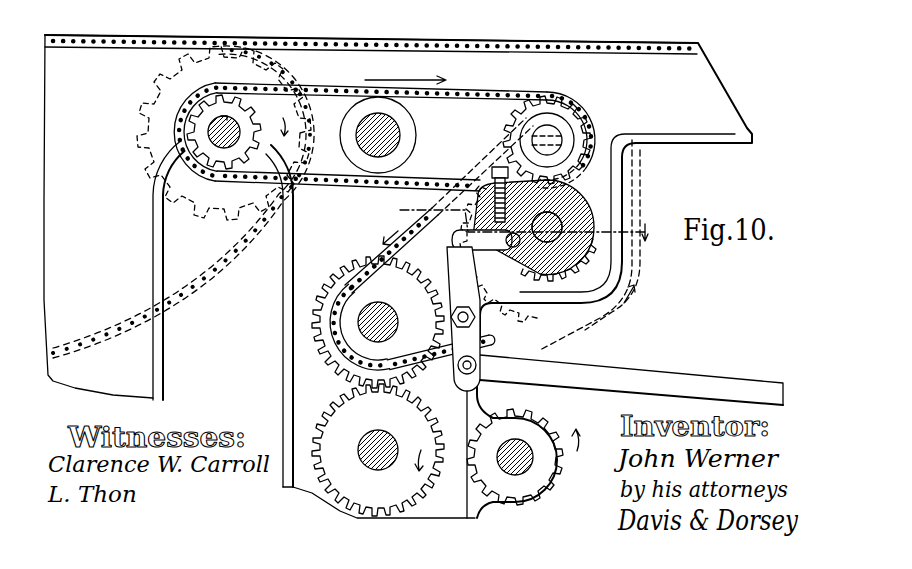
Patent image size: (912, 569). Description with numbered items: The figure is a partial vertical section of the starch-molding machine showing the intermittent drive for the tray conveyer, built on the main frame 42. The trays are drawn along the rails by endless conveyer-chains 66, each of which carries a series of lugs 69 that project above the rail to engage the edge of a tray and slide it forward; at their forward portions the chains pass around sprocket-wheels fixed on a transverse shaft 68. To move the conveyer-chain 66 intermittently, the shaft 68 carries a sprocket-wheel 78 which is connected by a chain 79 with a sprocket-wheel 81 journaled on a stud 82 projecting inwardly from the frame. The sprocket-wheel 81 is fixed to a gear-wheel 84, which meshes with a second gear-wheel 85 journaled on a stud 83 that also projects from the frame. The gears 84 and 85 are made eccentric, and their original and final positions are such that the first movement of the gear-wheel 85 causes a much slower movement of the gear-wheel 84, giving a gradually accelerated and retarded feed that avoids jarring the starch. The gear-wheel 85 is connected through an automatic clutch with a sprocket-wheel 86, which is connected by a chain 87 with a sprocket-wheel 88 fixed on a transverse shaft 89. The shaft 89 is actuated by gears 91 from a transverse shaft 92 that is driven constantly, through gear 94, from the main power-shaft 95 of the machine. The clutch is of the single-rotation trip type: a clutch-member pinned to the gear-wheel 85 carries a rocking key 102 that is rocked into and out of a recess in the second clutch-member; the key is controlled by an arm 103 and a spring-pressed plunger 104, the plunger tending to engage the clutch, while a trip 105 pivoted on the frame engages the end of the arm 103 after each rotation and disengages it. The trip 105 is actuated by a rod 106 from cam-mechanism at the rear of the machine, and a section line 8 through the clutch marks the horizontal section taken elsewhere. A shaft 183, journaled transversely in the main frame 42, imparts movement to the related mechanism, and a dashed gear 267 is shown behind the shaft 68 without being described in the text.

The section line 8- 8 is at (525, 229).
The main frame 42 is at (163, 370).
The endless conveyer-chain 66 is at (196, 292).
The transverse shaft 68 is at (209, 133).
The lug 69 is at (225, 36).
The sprocket-wheel 78 is at (258, 117).
The chain 79 is at (480, 93).
The sprocket-wheel 81 is at (553, 111).
The stud 82 is at (562, 126).
The stud 83 is at (565, 225).
The gear-wheel 84 is at (593, 140).
The gear-wheel 85 is at (585, 271).
The sprocket-wheel 86 is at (535, 320).
The chain 87 is at (401, 243).
The sprocket-wheel 88 is at (378, 322).
The transverse shaft 89 is at (352, 351).
The gears 91 is at (378, 450).
The transverse shaft 92 is at (368, 458).
The gear 94 is at (562, 477).
The main power-shaft 95 is at (525, 448).
The rocking key 102 is at (527, 268).
The arm 103 is at (458, 240).
The spring-pressed plunger 104 is at (488, 185).
The trip 105 is at (458, 278).
The rod 106 is at (631, 380).
The shaft 183 is at (400, 134).
The gear 267 is at (206, 218).